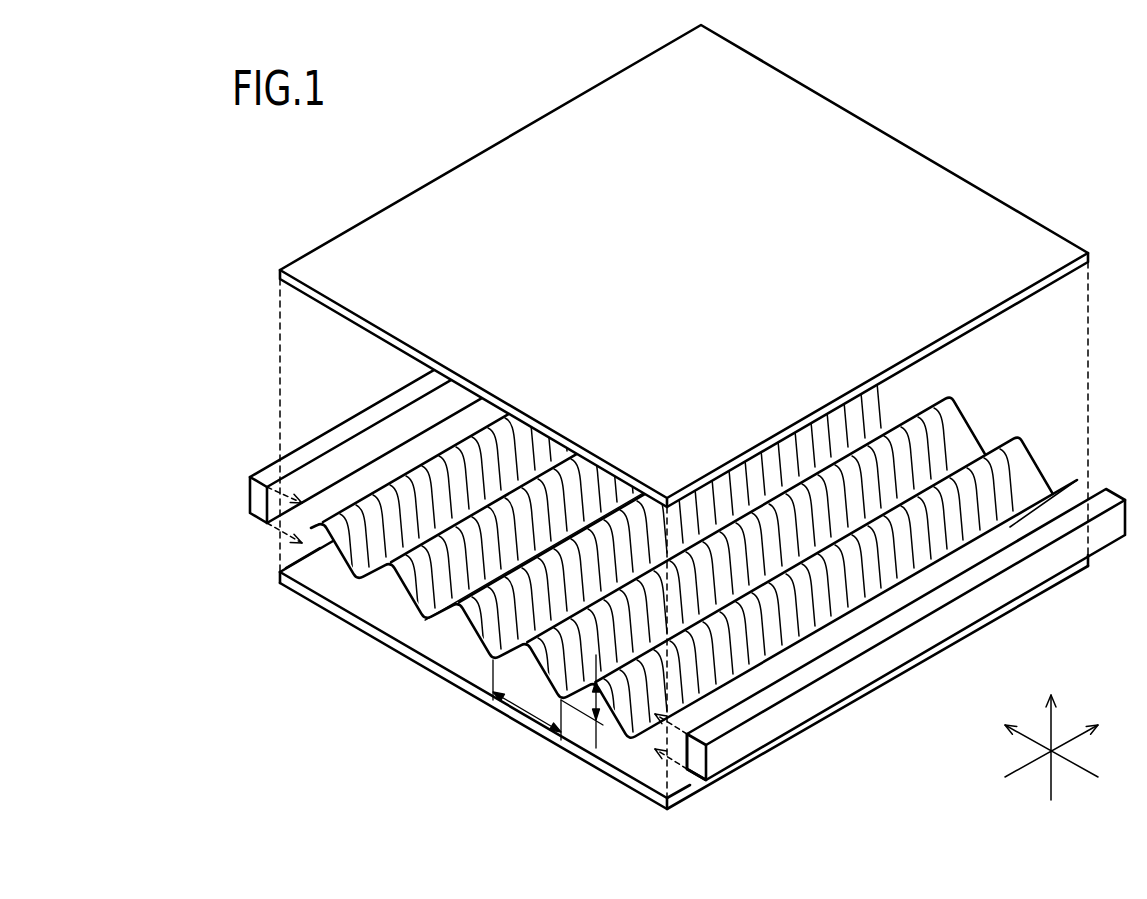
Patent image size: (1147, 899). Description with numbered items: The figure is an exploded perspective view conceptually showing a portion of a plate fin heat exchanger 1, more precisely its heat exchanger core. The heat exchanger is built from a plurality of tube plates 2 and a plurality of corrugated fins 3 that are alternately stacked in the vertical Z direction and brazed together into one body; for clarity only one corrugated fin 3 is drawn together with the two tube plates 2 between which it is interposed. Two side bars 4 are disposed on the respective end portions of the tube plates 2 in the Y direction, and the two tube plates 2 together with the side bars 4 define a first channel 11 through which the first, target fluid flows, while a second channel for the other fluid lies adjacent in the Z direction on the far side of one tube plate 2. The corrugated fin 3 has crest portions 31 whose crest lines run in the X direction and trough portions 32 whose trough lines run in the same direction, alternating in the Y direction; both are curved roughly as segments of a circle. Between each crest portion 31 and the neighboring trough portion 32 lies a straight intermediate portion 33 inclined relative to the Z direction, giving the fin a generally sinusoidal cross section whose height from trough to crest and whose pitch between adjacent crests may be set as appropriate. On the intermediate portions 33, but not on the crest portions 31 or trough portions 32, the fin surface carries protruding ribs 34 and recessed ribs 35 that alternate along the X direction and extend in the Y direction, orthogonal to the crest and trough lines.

The plate fin heat exchanger 1 is at (943, 109).
The tube plate 2 is at (993, 196).
The corrugated fin 3 is at (694, 519).
The side bar 4 is at (263, 468).
The first channel 11 is at (331, 585).
The crest portion 31 is at (395, 566).
The trough portion 32 is at (433, 623).
The intermediate portion 33 is at (388, 572).
The protruding rib 34 is at (487, 437).
The recessed rib 35 is at (473, 447).